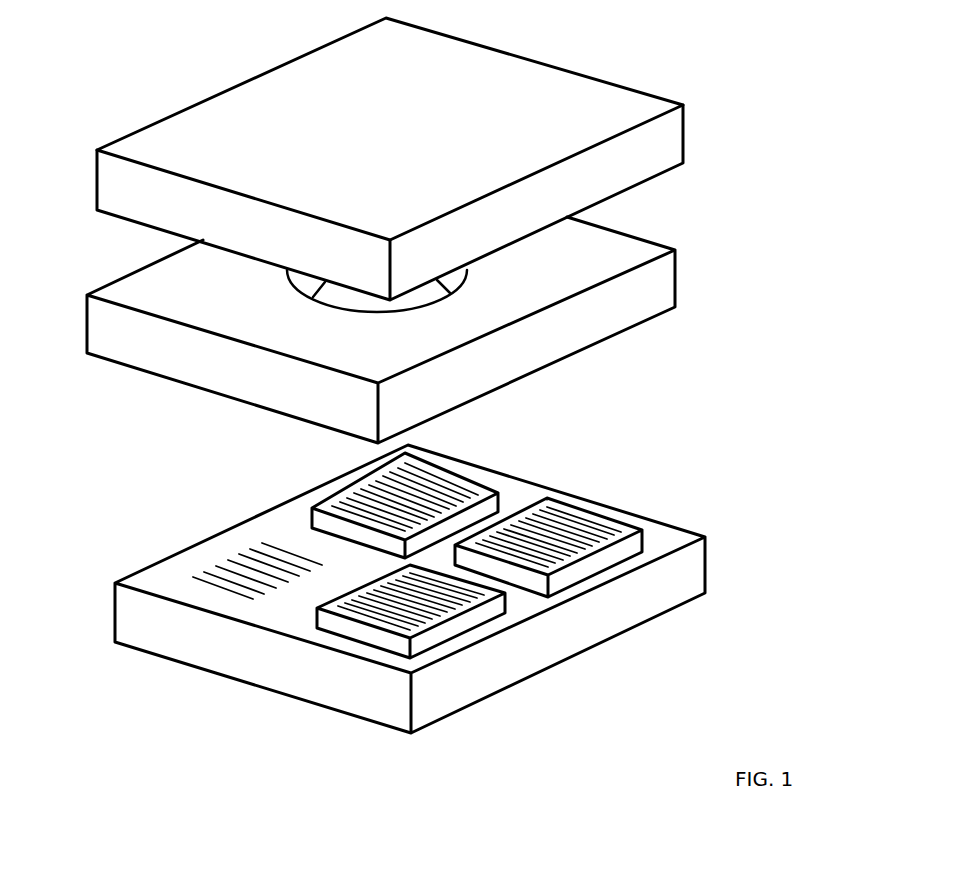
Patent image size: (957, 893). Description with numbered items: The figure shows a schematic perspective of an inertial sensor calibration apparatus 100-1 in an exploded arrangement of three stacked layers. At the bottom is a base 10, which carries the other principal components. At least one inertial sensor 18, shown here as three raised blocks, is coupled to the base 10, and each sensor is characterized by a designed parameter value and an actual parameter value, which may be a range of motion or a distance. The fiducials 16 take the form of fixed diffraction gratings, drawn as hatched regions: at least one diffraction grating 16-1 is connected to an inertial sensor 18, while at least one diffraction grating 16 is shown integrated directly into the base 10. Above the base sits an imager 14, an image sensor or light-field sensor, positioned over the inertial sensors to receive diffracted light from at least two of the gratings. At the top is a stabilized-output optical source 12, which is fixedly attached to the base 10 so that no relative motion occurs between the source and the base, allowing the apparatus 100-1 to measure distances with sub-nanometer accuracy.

The inertial sensor calibration apparatus 100-1 is at (846, 162).
The base 10 is at (667, 615).
The stabilized-output optical source 12 is at (686, 143).
The imager 14 is at (678, 273).
The fiducial 16 is at (235, 563).
The diffraction grating 16-1 is at (348, 505).
The inertial sensor 18 is at (547, 497).